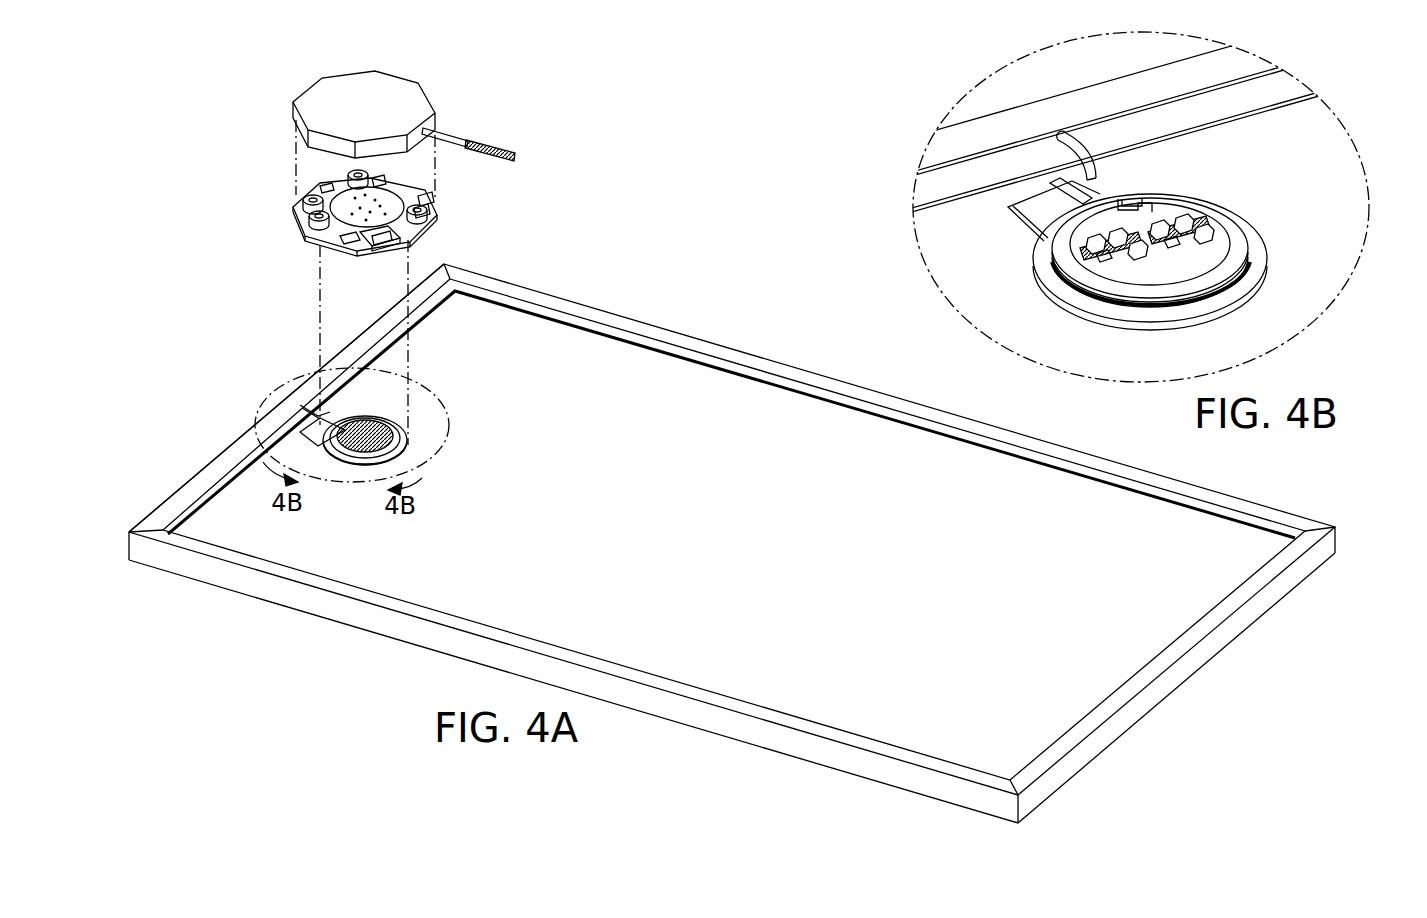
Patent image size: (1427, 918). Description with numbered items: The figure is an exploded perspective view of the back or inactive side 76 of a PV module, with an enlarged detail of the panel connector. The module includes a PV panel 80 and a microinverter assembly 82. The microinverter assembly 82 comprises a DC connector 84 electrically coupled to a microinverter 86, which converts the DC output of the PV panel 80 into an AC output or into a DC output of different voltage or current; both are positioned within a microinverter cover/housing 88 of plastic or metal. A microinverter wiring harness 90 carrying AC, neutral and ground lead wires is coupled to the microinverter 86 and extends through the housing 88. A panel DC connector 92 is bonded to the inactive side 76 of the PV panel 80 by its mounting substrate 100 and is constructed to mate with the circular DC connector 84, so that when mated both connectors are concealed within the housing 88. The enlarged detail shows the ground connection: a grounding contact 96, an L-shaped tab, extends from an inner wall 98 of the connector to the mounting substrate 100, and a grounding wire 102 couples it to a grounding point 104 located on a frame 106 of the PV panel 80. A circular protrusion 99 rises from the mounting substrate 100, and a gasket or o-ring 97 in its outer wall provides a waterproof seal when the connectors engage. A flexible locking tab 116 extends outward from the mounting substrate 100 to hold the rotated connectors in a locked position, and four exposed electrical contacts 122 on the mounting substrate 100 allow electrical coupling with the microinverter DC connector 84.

In FIG. 4A, the inactive side 76 is at (683, 417).
In FIG. 4A, the PV panel 80 is at (762, 358).
In FIG. 4B, the PV panel 80 is at (988, 117).
In FIG. 4A, the microinverter assembly 82 is at (266, 162).
In FIG. 4A, the DC connector 84 is at (330, 248).
In FIG. 4A, the microinverter 86 is at (307, 223).
In FIG. 4A, the microinverter cover/housing 88 is at (390, 93).
In FIG. 4A, the microinverter wiring harness 90 is at (460, 140).
In FIG. 4A, the DC connector 92 is at (353, 467).
In FIG. 4B, the DC connector 92 is at (1318, 152).
In FIG. 4B, the grounding contact 96 is at (1080, 182).
In FIG. 4B, the gasket or o-ring 97 is at (1198, 303).
In FIG. 4B, the inner wall 98 is at (1097, 212).
In FIG. 4B, the circular protrusion 99 is at (1240, 250).
In FIG. 4B, the mounting substrate 100 is at (1037, 215).
In FIG. 4B, the grounding wire 102 is at (1067, 143).
In FIG. 4B, the grounding point 104 is at (1040, 124).
In FIG. 4A, the frame 106 is at (175, 508).
In FIG. 4B, the frame 106 is at (1213, 68).
In FIG. 4B, the flexible locking tab 116 is at (1058, 184).
In FIG. 4B, the electrical contacts 122 is at (1170, 260).